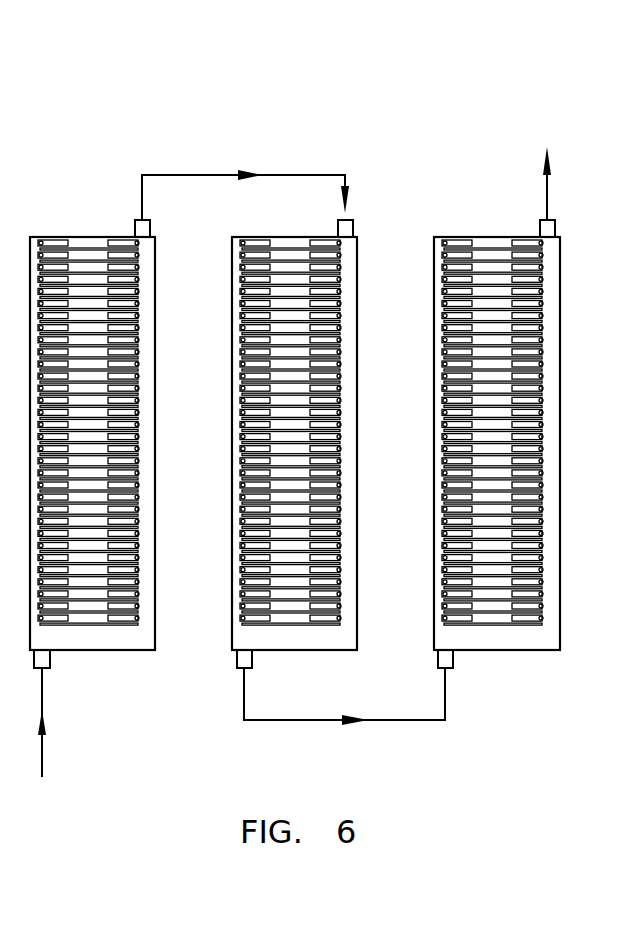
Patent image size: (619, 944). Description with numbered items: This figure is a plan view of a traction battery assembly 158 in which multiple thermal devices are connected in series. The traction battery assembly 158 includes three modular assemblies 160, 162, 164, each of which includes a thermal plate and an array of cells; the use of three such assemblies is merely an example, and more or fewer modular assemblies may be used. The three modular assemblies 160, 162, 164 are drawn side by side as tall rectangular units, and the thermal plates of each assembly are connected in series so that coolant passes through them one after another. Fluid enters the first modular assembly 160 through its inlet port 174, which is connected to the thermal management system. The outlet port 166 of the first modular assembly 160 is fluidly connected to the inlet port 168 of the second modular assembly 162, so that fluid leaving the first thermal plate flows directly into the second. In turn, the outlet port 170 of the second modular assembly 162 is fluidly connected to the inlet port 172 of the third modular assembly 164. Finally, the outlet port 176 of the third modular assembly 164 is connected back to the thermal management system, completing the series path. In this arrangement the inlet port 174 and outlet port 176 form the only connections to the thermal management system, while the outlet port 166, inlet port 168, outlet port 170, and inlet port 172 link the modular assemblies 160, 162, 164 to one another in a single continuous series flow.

The traction battery assembly 158 is at (311, 407).
The modular assembly 160 is at (58, 237).
The modular assembly 162 is at (261, 237).
The modular assembly 164 is at (469, 237).
The outlet port 166 is at (135, 232).
The inlet port 168 is at (338, 232).
The outlet port 170 is at (253, 660).
The inlet port 172 is at (455, 660).
The inlet port 174 is at (50, 656).
The outlet port 176 is at (556, 230).